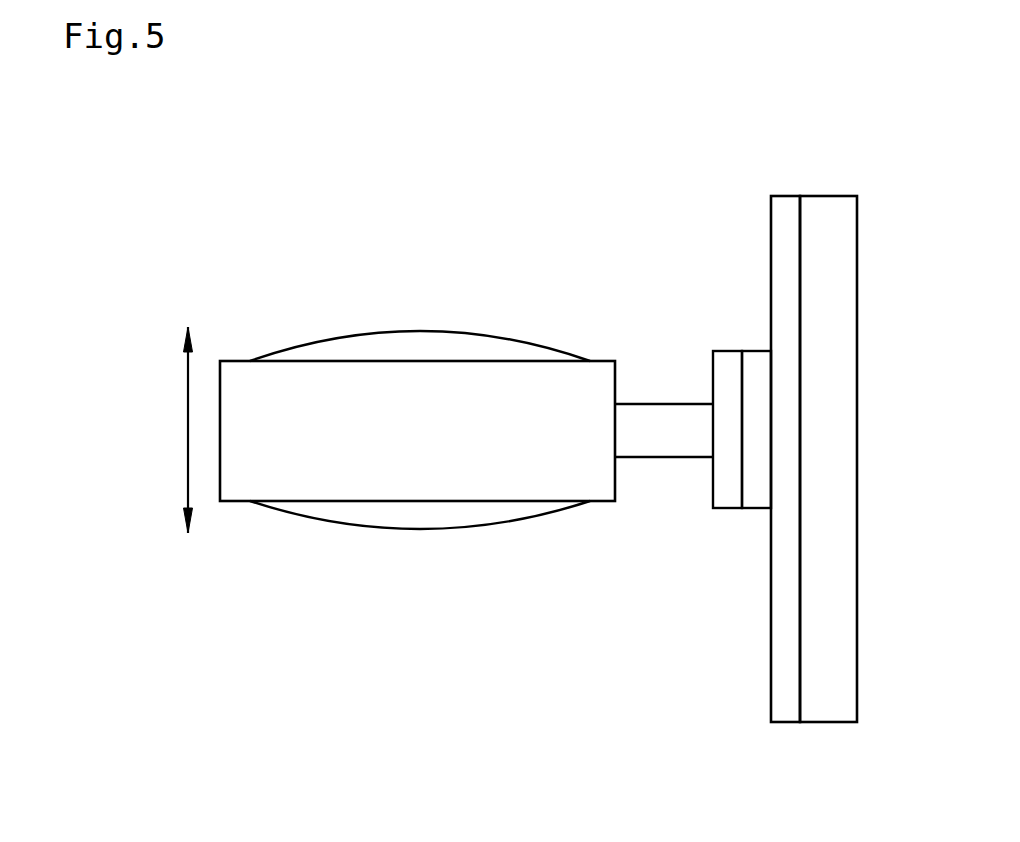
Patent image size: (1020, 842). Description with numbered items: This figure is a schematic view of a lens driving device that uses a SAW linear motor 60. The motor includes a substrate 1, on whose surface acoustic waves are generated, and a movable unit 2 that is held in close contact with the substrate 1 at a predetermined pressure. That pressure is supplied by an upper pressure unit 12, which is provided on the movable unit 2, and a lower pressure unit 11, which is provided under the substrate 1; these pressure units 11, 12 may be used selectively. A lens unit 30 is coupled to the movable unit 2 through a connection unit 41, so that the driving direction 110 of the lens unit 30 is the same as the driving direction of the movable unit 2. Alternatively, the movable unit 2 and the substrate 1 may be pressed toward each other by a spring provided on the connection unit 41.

The substrate 1 is at (777, 673).
The movable unit 2 is at (758, 500).
The lower pressure unit 11 is at (838, 660).
The upper pressure unit 12 is at (723, 362).
The lens unit 30 is at (422, 522).
The connection unit 41 is at (664, 417).
The SAW linear motor 60 is at (820, 506).
The driving direction 110 is at (150, 430).